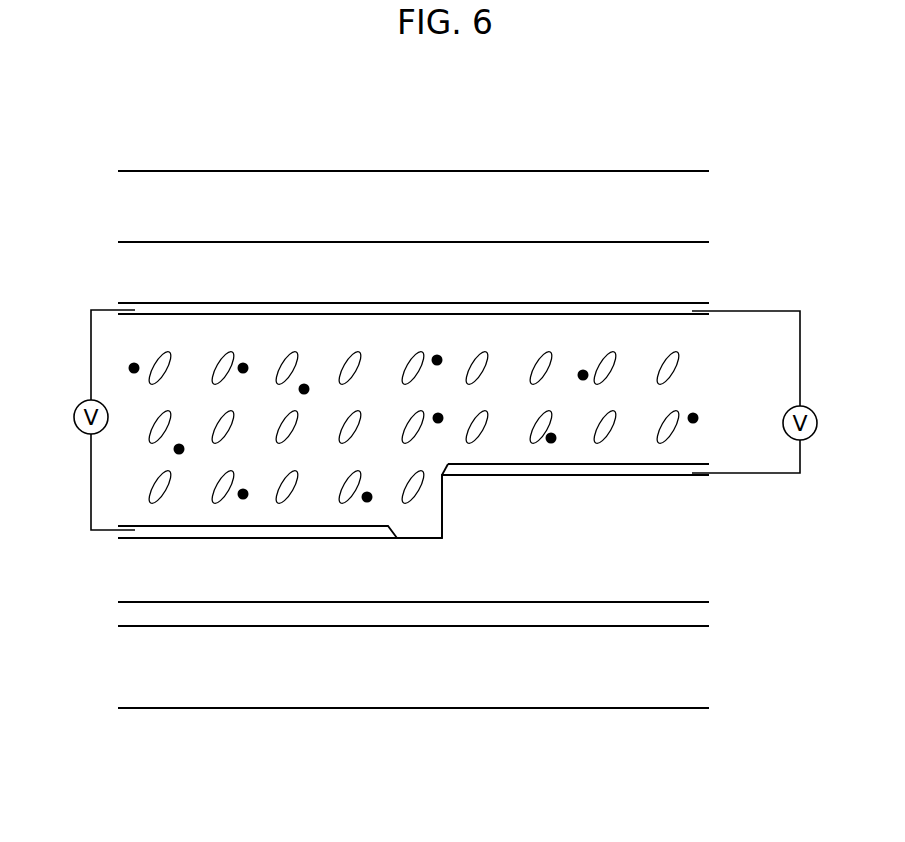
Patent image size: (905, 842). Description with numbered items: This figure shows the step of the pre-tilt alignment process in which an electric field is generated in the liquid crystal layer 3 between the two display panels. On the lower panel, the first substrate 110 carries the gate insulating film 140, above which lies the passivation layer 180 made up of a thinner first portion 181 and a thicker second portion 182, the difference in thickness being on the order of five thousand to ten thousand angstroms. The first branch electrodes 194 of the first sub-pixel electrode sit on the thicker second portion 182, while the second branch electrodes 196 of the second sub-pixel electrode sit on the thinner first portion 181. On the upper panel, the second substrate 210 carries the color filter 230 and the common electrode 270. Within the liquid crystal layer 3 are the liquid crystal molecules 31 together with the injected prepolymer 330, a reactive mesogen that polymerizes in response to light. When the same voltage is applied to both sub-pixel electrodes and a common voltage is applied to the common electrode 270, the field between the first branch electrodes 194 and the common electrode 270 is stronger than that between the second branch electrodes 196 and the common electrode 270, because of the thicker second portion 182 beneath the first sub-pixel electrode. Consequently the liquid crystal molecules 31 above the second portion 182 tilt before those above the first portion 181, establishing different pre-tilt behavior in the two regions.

The liquid crystal layer 3 is at (715, 315).
The liquid crystal molecules 31 is at (548, 353).
The prepolymer 330 is at (437, 360).
The first substrate 110 is at (558, 688).
The gate insulating film 140 is at (285, 612).
The passivation layer 180 is at (413, 636).
The first portion 181 is at (350, 557).
The second portion 182 is at (534, 499).
The first branch electrodes 194 is at (635, 472).
The second branch electrodes 196 is at (198, 532).
The second substrate 210 is at (698, 209).
The color filter 230 is at (698, 252).
The common electrode 270 is at (672, 312).